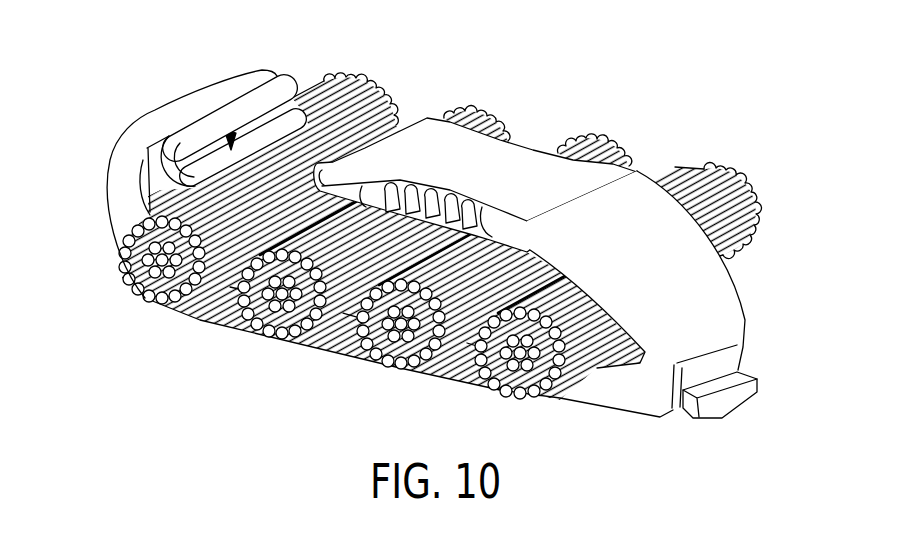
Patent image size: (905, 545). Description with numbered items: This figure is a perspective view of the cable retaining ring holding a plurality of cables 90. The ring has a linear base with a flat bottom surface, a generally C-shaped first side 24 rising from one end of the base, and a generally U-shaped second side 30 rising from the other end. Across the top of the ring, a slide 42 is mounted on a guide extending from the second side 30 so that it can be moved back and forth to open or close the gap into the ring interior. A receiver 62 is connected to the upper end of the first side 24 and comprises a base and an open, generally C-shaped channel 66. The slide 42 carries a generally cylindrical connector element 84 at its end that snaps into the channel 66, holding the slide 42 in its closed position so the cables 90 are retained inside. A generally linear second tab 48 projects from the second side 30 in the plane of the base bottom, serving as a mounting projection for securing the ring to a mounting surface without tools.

The first side 24 is at (128, 209).
The second side 30 is at (717, 317).
The slide 42 is at (520, 173).
The second tab 48 is at (737, 398).
The receiver 62 is at (262, 98).
The channel 66 is at (262, 124).
The cylindrical connector element 84 is at (382, 160).
The cables 90 is at (747, 217).